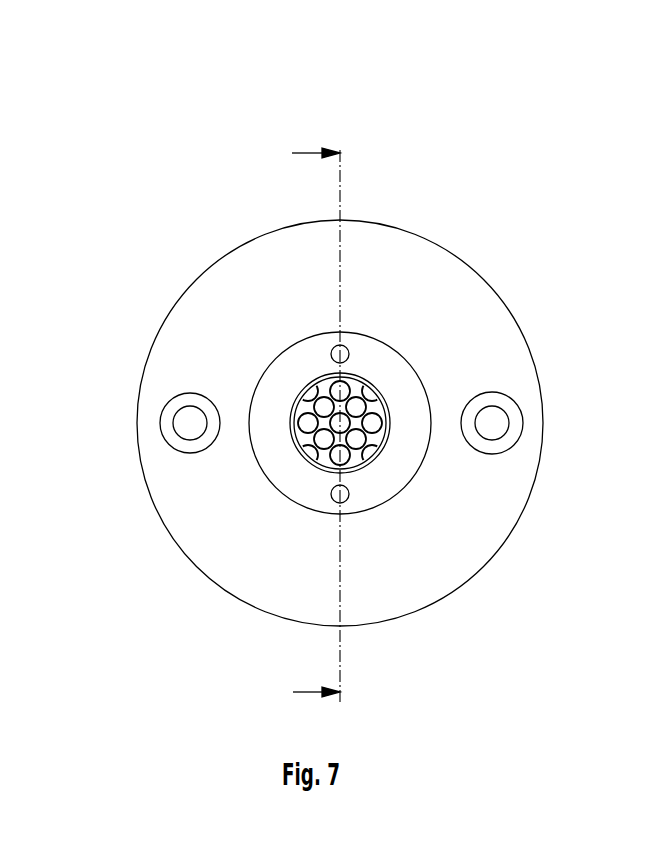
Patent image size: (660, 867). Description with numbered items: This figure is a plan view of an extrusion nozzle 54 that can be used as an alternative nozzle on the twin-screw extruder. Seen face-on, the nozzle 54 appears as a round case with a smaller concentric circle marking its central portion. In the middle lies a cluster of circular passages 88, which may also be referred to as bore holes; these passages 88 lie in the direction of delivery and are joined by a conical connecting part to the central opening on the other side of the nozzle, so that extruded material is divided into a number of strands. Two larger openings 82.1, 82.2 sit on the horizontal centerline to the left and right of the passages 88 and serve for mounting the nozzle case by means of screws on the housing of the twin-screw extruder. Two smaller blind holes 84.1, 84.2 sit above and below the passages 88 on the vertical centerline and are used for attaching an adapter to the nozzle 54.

The extrusion nozzle 54 is at (472, 188).
The opening 82.1 is at (183, 418).
The opening 82.2 is at (502, 418).
The blind hole 84.1 is at (334, 350).
The blind hole 84.2 is at (338, 498).
The circular passages 88 is at (355, 433).